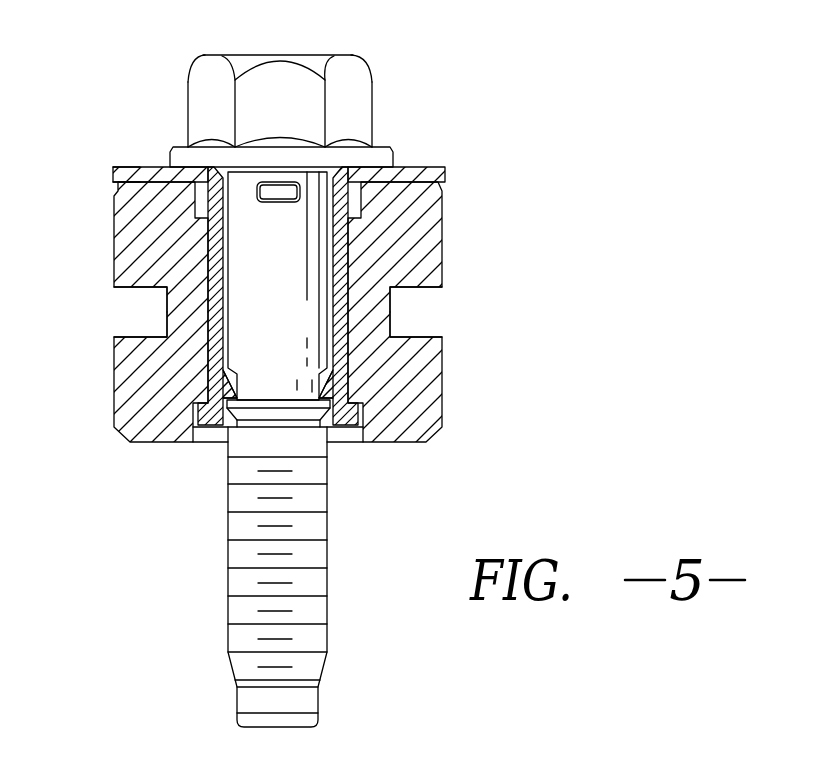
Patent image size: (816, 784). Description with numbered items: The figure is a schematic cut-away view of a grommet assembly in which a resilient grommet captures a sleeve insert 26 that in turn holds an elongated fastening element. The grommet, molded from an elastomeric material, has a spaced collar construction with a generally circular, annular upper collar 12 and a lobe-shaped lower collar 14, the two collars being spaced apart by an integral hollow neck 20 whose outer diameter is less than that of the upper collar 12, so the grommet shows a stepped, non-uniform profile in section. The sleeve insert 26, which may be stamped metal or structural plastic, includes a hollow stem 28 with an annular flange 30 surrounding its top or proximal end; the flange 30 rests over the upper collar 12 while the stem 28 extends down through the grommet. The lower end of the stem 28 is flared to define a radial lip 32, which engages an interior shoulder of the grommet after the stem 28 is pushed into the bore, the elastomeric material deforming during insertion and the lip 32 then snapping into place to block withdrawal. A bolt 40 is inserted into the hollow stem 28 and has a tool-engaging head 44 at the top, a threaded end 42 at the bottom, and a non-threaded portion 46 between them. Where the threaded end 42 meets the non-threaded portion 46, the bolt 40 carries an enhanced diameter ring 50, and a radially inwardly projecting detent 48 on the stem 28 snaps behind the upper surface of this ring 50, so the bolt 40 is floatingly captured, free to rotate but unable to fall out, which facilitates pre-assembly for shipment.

The upper collar 12 is at (452, 228).
The lower collar 14 is at (452, 385).
The neck 20 is at (393, 316).
The sleeve insert 26 is at (416, 158).
The hollow stem 28 is at (207, 238).
The annular flange 30 is at (143, 166).
The radial lip 32 is at (345, 427).
The bolt 40 is at (218, 553).
The threaded end 42 is at (328, 585).
The tool-engaging head 44 is at (247, 55).
The bolt body 46 is at (288, 233).
The detent 48 is at (225, 372).
The enhanced diameter ring 50 is at (265, 405).